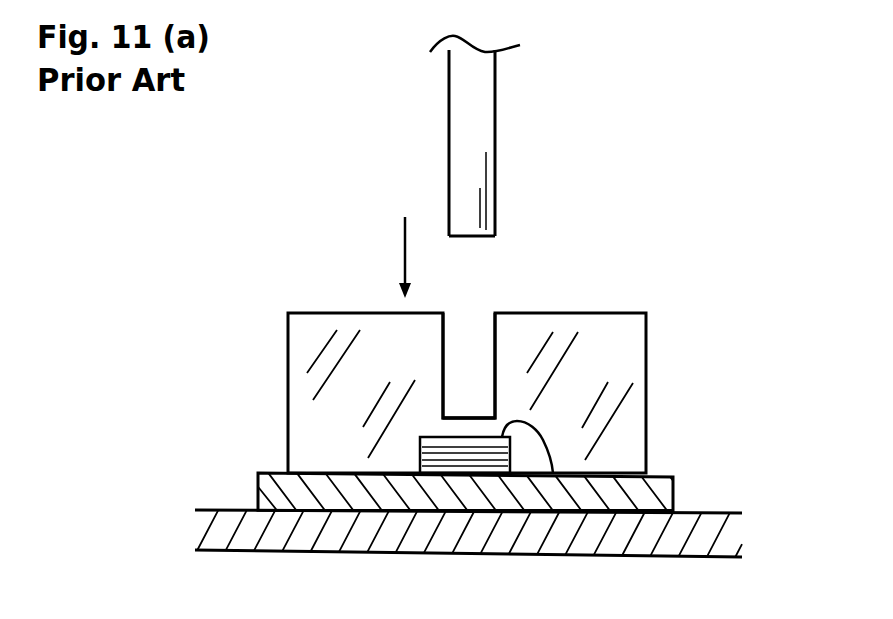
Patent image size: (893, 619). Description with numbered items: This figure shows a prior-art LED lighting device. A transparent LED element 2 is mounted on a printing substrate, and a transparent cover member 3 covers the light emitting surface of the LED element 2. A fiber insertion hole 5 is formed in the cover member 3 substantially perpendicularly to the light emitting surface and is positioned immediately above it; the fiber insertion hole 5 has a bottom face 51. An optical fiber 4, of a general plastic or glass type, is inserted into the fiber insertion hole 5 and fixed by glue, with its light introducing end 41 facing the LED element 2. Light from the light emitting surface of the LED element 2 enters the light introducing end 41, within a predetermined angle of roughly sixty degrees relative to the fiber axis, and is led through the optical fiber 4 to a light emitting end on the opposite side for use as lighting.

The LED element 2 is at (420, 447).
The cover member 3 is at (647, 412).
The optical fiber 4 is at (497, 113).
The fiber insertion hole 5 is at (462, 330).
The light introducing end 41 is at (468, 238).
The bottom face 51 is at (470, 412).